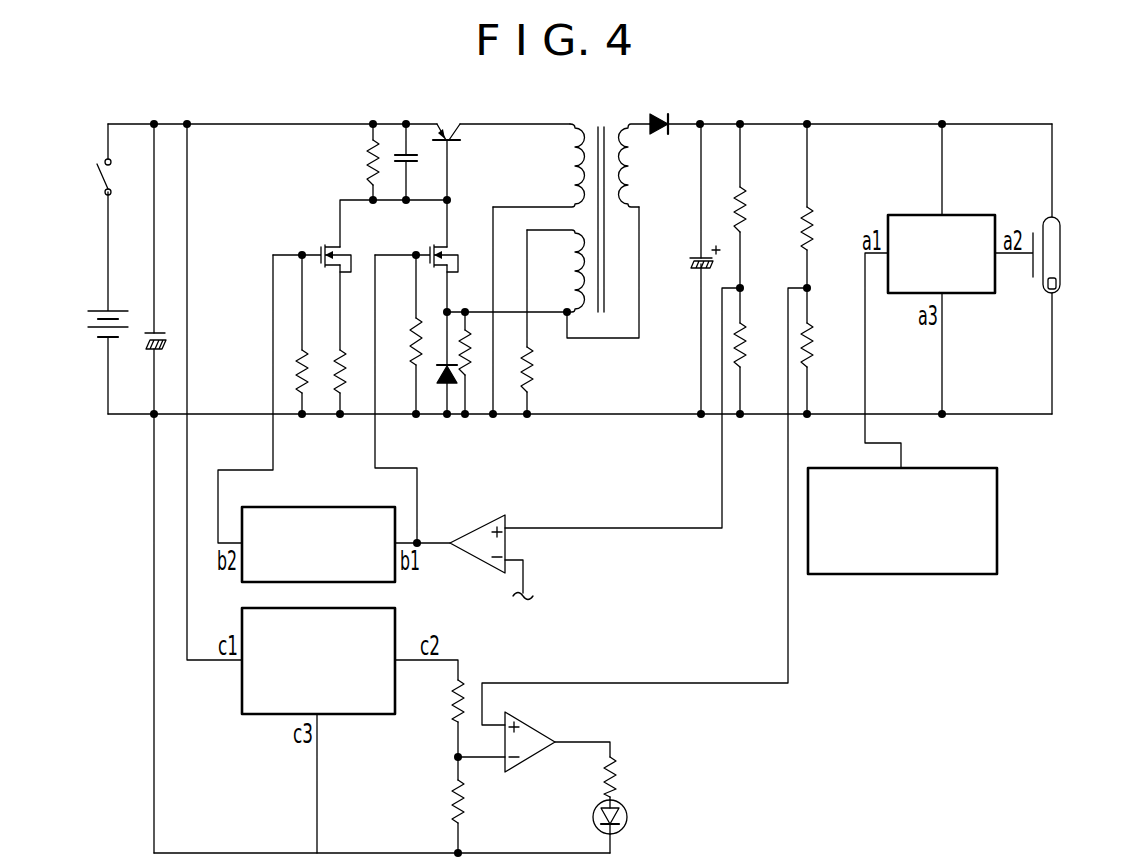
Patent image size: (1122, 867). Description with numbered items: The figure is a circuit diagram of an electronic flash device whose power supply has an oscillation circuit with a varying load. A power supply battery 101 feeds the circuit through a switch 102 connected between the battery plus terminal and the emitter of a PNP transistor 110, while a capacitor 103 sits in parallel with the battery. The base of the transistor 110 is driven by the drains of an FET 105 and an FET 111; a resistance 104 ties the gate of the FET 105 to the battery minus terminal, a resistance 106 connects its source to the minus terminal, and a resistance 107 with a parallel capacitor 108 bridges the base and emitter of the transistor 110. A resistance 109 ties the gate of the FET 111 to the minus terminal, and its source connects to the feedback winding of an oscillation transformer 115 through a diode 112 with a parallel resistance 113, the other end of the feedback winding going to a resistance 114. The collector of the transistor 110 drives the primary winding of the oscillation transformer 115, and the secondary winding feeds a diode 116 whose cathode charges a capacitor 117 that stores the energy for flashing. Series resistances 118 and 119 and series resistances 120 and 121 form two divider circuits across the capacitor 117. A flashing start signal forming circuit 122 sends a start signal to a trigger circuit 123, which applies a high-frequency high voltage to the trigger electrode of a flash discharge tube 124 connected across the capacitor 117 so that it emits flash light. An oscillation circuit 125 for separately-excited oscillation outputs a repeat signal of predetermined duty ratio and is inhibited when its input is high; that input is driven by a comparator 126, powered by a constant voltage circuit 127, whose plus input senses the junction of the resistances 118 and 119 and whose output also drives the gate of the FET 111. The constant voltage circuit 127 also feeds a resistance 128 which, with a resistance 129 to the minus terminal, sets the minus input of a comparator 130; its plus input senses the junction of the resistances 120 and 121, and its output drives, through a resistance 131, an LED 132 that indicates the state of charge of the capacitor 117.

The power supply battery 101 is at (87, 321).
The switch 102 is at (103, 157).
The capacitor 103 is at (170, 334).
The resistance 104 is at (308, 348).
The FET 105 is at (352, 256).
The resistance 106 is at (346, 380).
The resistance 107 is at (365, 162).
The capacitor 108 is at (412, 158).
The resistance 109 is at (410, 325).
The transistor 110 is at (452, 128).
The FET 111 is at (460, 250).
The diode 112 is at (440, 383).
The resistance 113 is at (472, 376).
The resistance 114 is at (533, 370).
The oscillation transformer 115 is at (602, 122).
The diode 116 is at (662, 112).
The capacitor 117 is at (692, 260).
The resistance 118 is at (746, 200).
The resistance 119 is at (746, 340).
The resistance 120 is at (814, 226).
The resistance 121 is at (814, 345).
The flashing start signal forming circuit 122 is at (958, 468).
The trigger circuit 123 is at (965, 215).
The flash discharge tube 124 is at (1060, 225).
The oscillation circuit 125 is at (350, 507).
The comparator 126 is at (508, 522).
The constant voltage circuit 127 is at (397, 640).
The resistance 128 is at (452, 700).
The resistance 129 is at (452, 803).
The comparator 130 is at (540, 735).
The resistance 131 is at (618, 770).
The LED 132 is at (628, 816).